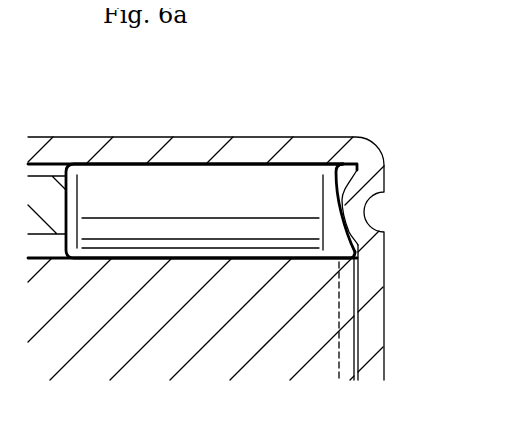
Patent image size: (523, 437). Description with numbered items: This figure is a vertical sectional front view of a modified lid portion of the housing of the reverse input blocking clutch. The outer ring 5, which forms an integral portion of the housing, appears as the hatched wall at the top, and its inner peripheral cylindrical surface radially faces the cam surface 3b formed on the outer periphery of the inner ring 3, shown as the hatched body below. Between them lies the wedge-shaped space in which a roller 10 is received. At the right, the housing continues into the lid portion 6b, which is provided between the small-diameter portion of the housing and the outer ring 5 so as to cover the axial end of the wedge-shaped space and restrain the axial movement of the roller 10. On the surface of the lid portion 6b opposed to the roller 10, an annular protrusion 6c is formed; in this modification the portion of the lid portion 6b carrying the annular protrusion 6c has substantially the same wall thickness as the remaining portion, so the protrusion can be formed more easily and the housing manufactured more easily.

The inner ring 3 is at (309, 340).
The cam surface 3b is at (120, 260).
The outer ring 5 is at (182, 148).
The lid portion 6b is at (368, 274).
The annular protrusion 6c is at (353, 218).
The roller 10 is at (247, 197).